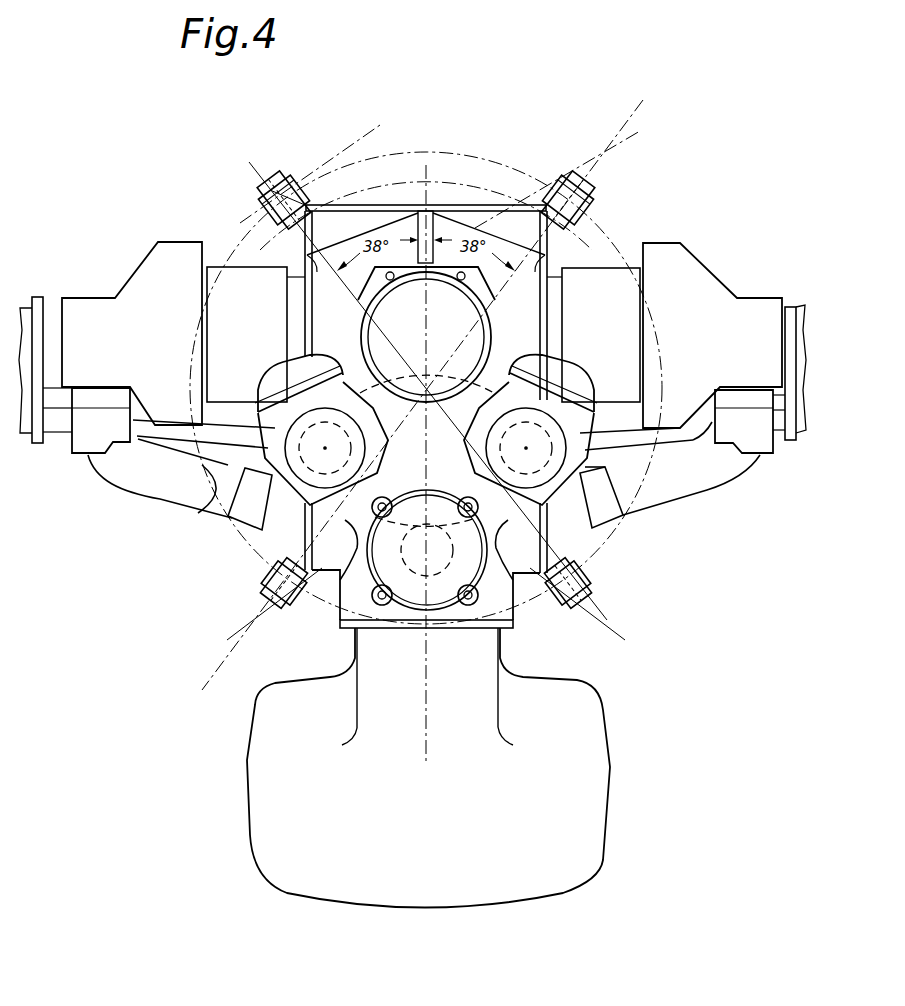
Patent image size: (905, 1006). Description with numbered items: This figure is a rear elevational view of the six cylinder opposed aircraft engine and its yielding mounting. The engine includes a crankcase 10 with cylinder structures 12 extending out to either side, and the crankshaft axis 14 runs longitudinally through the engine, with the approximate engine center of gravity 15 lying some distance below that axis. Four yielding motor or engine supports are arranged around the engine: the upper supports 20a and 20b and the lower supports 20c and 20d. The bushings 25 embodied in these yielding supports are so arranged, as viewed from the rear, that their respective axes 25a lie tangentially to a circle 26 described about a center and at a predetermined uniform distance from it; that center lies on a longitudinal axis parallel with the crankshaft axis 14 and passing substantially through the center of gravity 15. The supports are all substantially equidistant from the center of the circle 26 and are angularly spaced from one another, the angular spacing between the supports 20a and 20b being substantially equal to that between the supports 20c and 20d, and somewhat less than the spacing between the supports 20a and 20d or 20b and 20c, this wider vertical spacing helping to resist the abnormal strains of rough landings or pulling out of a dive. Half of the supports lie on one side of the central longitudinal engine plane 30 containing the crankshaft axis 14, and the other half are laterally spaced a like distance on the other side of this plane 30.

The crankcase 10 is at (468, 233).
The cylinder structures 12 is at (157, 273).
The crankshaft axis 14 is at (460, 306).
The engine center of gravity 15 is at (441, 389).
The yielding support 20a is at (594, 188).
The yielding support 20b is at (256, 188).
The yielding support 20c is at (260, 592).
The yielding support 20d is at (595, 596).
The bushings 25 is at (296, 180).
The bushing axes 25a is at (350, 148).
The circle 26 is at (463, 157).
The central longitudinal engine plane 30 is at (427, 750).